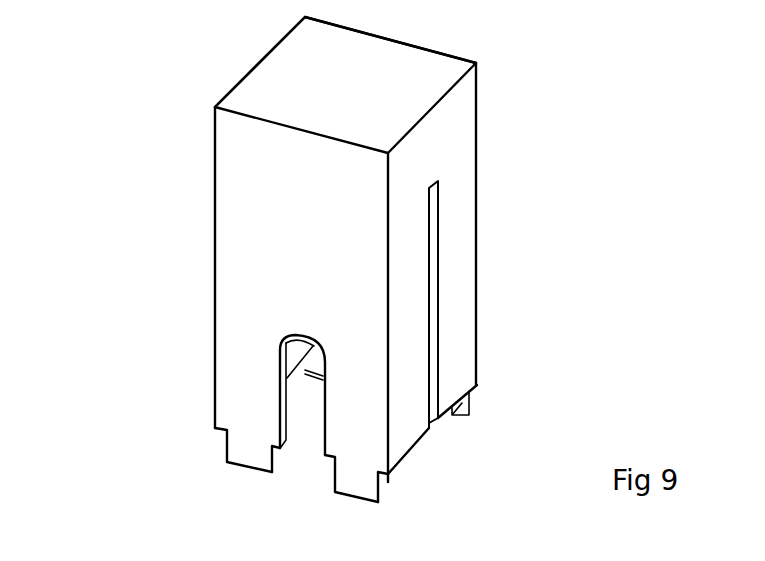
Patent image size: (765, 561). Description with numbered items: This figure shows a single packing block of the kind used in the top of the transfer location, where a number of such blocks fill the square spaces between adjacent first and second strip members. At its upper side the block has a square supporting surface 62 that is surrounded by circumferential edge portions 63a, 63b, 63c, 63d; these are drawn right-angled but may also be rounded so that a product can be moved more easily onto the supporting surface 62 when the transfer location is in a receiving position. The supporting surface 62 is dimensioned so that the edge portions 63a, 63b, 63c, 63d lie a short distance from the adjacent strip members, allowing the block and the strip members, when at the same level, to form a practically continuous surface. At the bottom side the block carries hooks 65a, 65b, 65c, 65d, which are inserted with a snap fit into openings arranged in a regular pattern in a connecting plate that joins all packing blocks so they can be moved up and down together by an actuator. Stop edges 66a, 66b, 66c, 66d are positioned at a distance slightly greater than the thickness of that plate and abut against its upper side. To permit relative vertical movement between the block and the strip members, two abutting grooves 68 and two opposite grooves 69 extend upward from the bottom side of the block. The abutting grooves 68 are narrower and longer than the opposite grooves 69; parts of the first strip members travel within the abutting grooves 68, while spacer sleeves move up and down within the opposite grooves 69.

The supporting surface 62 is at (358, 96).
The circumferential edge portion 63a is at (273, 125).
The circumferential edge portion 63b is at (435, 105).
The circumferential edge portion 63c is at (415, 45).
The circumferential edge portion 63d is at (257, 66).
The hook 65a is at (281, 452).
The hook 65b is at (391, 480).
The hook 65c is at (451, 416).
The hook 65d is at (306, 372).
The stop edge 66a is at (218, 430).
The stop edge 66b is at (408, 455).
The stop edge 66c is at (451, 423).
The stop edge 66d is at (286, 337).
The abutting groove 68 is at (432, 265).
The opposite groove 69 is at (319, 418).